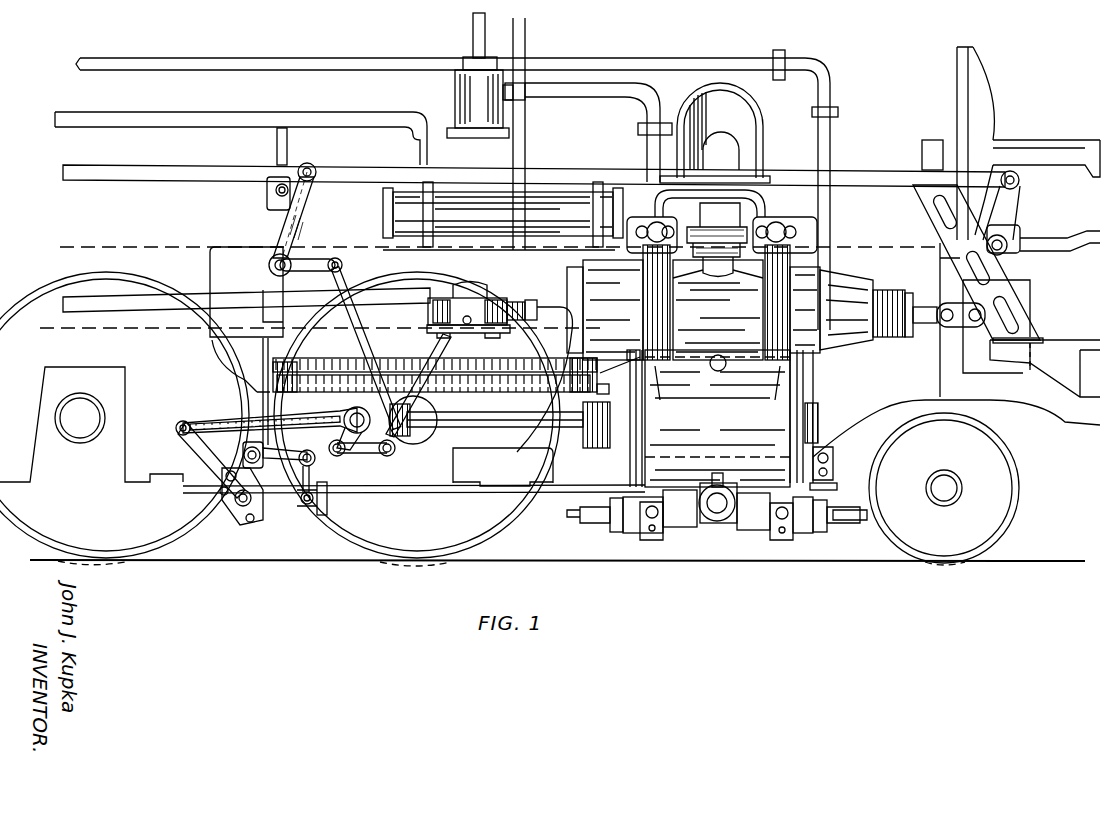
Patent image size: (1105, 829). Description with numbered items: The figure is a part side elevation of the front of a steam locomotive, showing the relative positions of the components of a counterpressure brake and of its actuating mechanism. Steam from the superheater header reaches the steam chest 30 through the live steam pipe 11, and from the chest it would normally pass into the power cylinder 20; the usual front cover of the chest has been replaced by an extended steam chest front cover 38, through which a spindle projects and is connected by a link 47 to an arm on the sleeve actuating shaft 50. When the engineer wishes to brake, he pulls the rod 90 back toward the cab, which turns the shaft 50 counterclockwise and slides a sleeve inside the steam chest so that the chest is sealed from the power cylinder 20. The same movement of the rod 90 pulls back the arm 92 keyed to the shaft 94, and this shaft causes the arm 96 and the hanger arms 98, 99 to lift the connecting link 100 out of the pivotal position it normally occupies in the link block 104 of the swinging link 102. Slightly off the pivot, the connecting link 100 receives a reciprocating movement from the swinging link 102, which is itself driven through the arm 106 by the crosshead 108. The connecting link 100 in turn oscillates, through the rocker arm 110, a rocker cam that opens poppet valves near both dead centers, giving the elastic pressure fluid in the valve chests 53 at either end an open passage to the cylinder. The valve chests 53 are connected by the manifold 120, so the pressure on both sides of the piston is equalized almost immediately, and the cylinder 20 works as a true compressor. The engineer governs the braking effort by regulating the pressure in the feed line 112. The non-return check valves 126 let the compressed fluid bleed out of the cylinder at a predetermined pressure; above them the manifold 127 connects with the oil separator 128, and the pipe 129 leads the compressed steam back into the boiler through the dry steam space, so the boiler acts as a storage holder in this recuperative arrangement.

The live steam pipe 11 is at (717, 163).
The power cylinder 20 is at (733, 420).
The steam chest 30 is at (665, 310).
The extended steam chest front cover 38 is at (851, 300).
The link 47 is at (963, 315).
The sleeve actuating shaft 50 is at (1013, 237).
The valve chest 53 is at (790, 522).
The rod 90 is at (127, 165).
The arm 92 is at (302, 193).
The shaft 94 is at (268, 266).
The arm 96 is at (312, 262).
The hanger arm 98 is at (330, 313).
The hanger arm 99 is at (312, 473).
The connecting link 100 is at (423, 493).
The swinging link 102 is at (203, 455).
The link block 104 is at (243, 500).
The arm 106 is at (243, 428).
The crosshead 108 is at (413, 436).
The rocker arm 110 is at (740, 525).
The feed line 112 is at (720, 66).
The manifold 120 is at (690, 520).
The non-return check valve 126 is at (657, 230).
The manifold 127 is at (580, 90).
The oil separator 128 is at (460, 85).
The pipe 129 is at (472, 22).